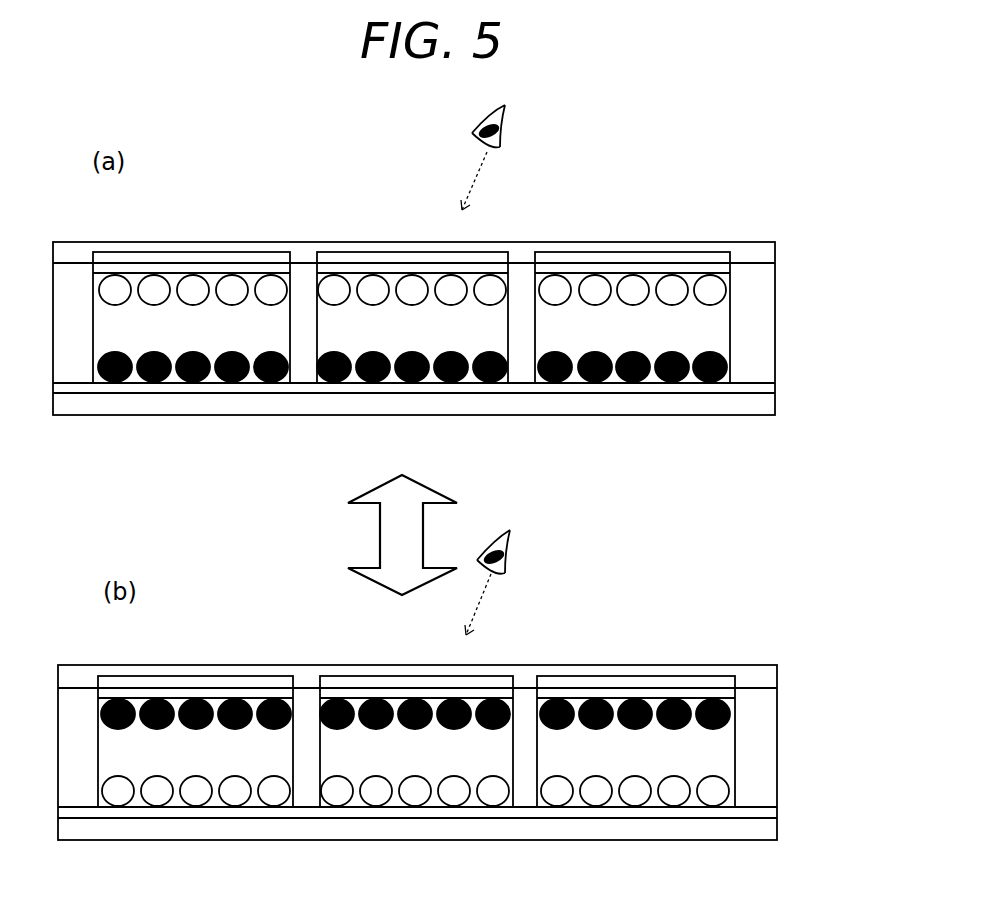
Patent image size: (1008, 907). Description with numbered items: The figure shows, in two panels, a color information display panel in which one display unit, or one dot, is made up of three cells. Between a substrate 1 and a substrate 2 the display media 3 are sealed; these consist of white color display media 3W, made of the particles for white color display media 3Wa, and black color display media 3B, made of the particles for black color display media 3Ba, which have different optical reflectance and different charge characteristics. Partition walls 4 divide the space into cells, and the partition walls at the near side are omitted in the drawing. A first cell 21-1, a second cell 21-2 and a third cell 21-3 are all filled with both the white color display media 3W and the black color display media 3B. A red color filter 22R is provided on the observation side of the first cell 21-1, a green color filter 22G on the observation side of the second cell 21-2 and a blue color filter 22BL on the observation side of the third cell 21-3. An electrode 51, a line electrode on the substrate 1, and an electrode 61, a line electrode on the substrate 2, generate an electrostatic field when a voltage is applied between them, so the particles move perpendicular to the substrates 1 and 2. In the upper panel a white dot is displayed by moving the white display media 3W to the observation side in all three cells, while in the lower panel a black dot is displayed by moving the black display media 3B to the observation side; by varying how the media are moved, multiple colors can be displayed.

The substrate 1 is at (272, 405).
The substrate 2 is at (515, 251).
The display media 3 is at (486, 540).
The white color display media 3W is at (470, 540).
The black color display media 3B is at (469, 538).
The particles for white color display media 3Wa is at (673, 290).
The particles for black color display media 3Ba is at (673, 381).
The partition wall 4 is at (77, 370).
The electrode 51 is at (468, 385).
The electrode 61 is at (250, 267).
The first cell 21-1 is at (219, 342).
The second cell 21-2 is at (439, 342).
The third cell 21-3 is at (659, 342).
The red color filter 22R is at (188, 256).
The green color filter 22G is at (390, 256).
The blue color filter 22BL is at (630, 256).